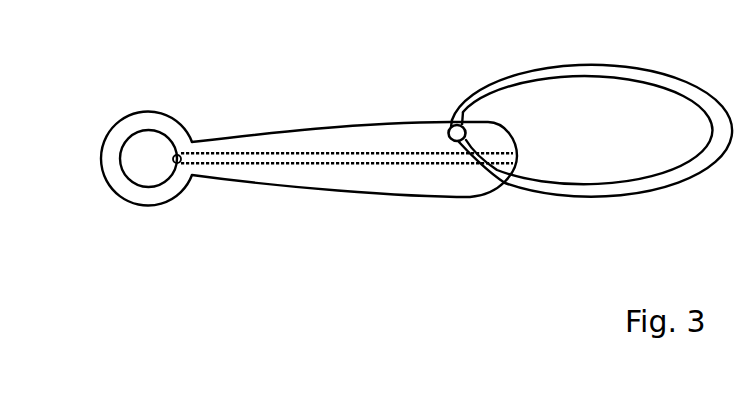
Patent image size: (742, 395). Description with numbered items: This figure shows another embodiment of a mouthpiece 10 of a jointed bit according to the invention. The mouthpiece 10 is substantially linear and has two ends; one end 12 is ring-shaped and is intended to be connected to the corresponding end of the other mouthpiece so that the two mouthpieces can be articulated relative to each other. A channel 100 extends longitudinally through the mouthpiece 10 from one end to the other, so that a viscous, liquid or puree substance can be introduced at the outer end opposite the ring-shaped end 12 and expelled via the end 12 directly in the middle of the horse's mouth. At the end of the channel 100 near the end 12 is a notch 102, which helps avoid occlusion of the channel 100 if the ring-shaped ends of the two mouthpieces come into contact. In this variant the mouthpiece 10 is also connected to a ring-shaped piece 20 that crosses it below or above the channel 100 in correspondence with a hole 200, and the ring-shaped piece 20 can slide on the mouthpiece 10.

The mouthpiece 10 is at (420, 187).
The channel 100 is at (312, 158).
The ring-shaped end 12 is at (112, 165).
The notch 102 is at (180, 157).
The hole 200 is at (445, 130).
The ring-shaped piece 20 is at (665, 80).